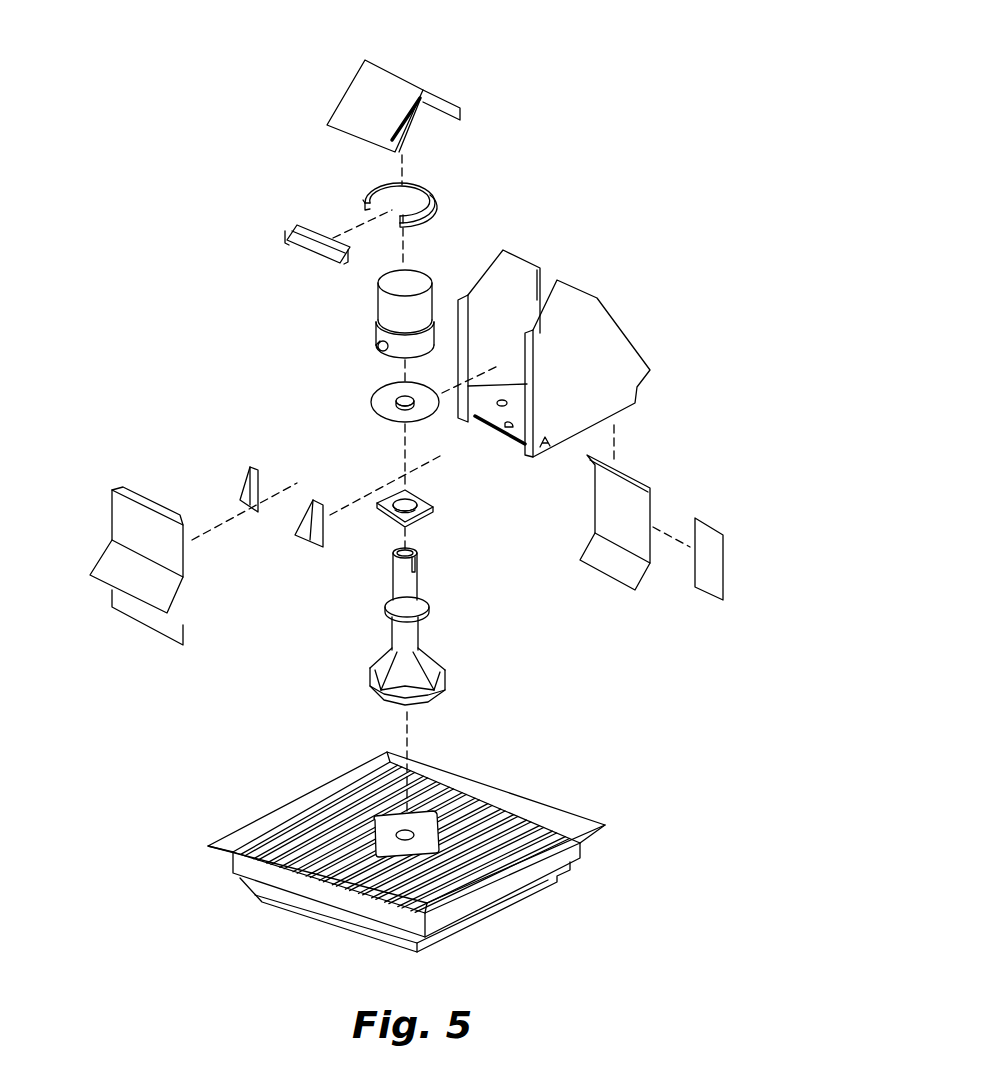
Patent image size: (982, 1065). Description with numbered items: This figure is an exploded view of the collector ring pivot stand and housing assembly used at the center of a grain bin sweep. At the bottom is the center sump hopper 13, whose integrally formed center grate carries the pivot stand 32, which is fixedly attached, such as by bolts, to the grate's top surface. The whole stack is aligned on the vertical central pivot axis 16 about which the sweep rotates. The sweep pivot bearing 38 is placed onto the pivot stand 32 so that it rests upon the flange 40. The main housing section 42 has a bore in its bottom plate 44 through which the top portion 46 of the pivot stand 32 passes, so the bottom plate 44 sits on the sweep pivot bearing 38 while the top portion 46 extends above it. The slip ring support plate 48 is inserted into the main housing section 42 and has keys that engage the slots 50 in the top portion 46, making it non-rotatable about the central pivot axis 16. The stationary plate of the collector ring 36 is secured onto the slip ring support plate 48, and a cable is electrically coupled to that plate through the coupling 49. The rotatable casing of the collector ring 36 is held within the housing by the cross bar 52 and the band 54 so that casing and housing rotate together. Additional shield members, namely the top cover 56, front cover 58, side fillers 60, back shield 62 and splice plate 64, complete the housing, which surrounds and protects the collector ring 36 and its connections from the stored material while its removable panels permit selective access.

The center sump hopper 13 is at (305, 888).
The central pivot axis 16 is at (407, 740).
The pivot stand 32 is at (402, 628).
The collector ring 36 is at (388, 330).
The sweep pivot bearing 38 is at (427, 502).
The flange 40 is at (427, 600).
The main housing section 42 is at (602, 345).
The bottom plate 44 is at (493, 430).
The top portion 46 is at (400, 585).
The slip ring support plate 48 is at (388, 395).
The coupling 49 is at (378, 347).
The slots 50 is at (420, 565).
The cross bar 52 is at (297, 227).
The band 54 is at (370, 196).
The top cover 56 is at (360, 100).
The front cover 58 is at (127, 522).
The side fillers 60 is at (250, 493).
The back shield 62 is at (603, 520).
The splice plate 64 is at (712, 585).